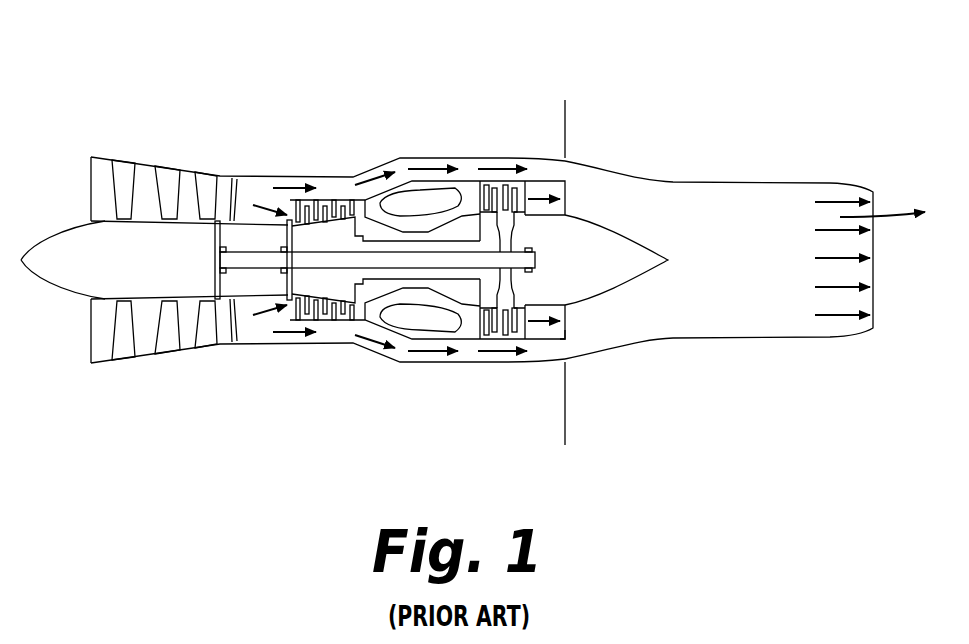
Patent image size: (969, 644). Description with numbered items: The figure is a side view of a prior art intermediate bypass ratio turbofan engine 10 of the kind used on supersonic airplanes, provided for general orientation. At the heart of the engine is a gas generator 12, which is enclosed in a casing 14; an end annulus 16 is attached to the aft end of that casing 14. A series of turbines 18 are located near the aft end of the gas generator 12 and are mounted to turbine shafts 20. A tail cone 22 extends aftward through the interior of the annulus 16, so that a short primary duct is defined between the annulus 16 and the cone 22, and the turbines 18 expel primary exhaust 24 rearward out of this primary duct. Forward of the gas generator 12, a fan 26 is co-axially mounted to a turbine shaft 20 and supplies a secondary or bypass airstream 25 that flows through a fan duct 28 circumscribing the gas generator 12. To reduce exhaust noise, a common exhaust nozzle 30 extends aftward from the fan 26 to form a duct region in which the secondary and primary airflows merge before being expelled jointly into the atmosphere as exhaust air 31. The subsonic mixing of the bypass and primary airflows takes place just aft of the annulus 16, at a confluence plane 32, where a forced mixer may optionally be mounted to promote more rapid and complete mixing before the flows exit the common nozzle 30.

The intermediate bypass ratio turbofan engine 10 is at (510, 72).
The gas generator 12 is at (428, 204).
The casing 14 is at (410, 343).
The end annulus 16 is at (572, 338).
The turbines 18 is at (524, 194).
The turbine shafts 20 is at (245, 266).
The tail cone 22 is at (657, 255).
The primary exhaust 24 is at (538, 323).
The secondary or by-pass airstream 25 is at (290, 200).
The fan 26 is at (191, 165).
The fan duct 28 is at (405, 170).
The common exhaust nozzle 30 is at (713, 180).
The exhaust air 31 is at (893, 220).
The confluence plane 32 is at (568, 122).